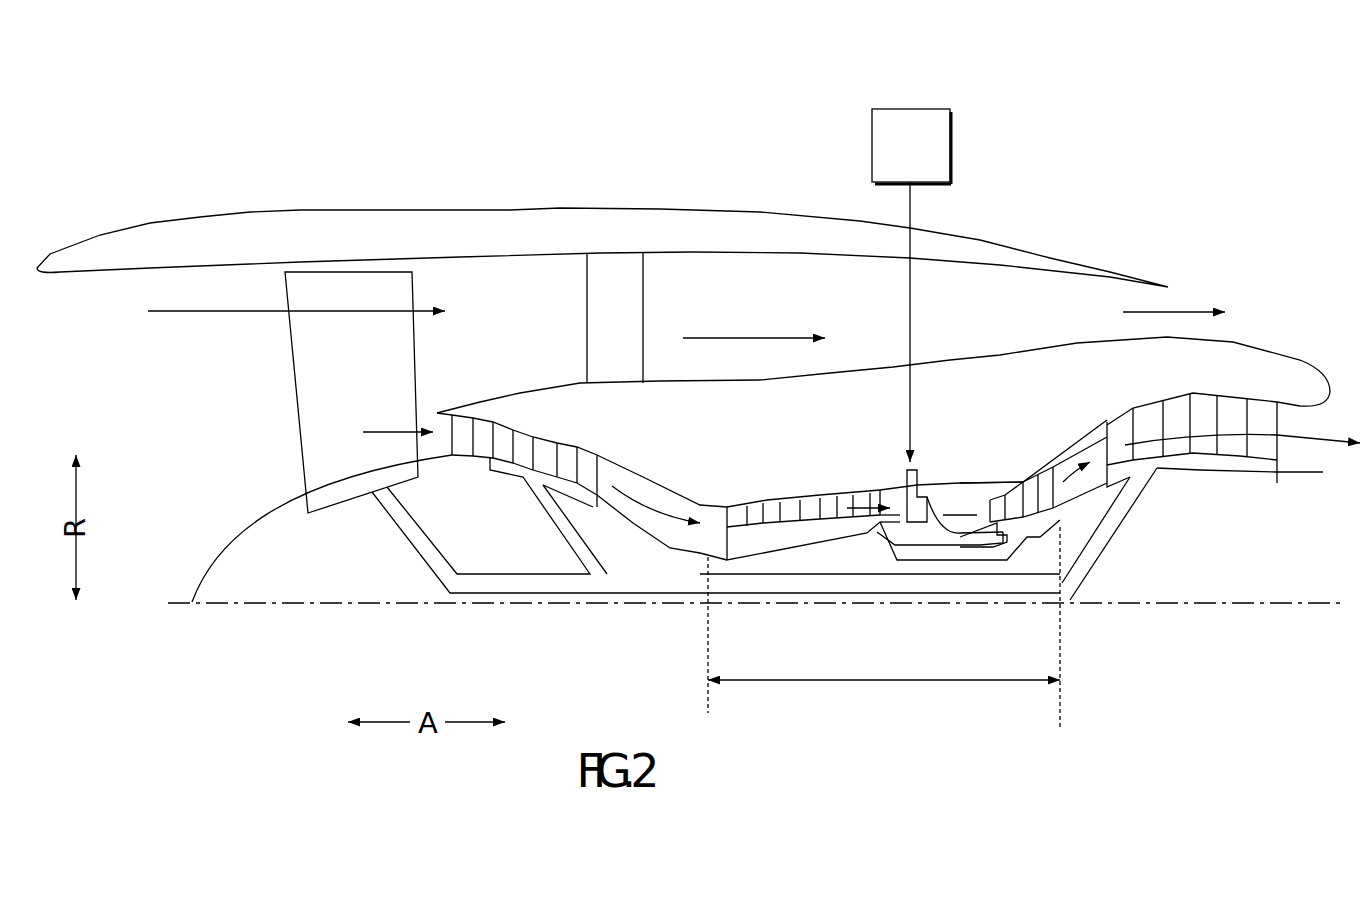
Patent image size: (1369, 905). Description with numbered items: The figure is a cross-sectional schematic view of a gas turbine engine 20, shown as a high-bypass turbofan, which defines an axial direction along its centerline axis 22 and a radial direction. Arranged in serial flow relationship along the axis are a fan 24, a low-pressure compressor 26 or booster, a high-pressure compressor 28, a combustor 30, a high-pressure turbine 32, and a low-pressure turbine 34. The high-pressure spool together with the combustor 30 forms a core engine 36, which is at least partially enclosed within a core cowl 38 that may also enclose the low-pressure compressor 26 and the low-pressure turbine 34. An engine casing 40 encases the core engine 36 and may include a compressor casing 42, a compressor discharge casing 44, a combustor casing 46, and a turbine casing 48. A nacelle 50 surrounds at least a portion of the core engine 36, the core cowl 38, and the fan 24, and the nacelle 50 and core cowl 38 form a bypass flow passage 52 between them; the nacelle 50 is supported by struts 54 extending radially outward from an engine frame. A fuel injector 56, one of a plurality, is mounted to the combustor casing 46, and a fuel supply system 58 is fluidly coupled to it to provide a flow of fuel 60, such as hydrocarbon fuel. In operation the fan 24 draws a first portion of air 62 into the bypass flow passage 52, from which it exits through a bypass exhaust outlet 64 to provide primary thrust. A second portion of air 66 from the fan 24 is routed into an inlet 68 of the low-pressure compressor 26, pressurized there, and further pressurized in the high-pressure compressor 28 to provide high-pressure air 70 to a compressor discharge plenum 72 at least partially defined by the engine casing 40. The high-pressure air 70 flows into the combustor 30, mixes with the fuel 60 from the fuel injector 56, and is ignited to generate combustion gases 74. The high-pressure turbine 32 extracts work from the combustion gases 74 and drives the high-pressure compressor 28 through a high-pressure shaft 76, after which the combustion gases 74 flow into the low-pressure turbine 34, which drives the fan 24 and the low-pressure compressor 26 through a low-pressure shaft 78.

The gas turbine engine 20 is at (602, 210).
The centerline axis 22 is at (362, 606).
The fan 24 is at (252, 392).
The low-pressure compressor 26 is at (530, 405).
The high-pressure compressor 28 is at (812, 560).
The combustor 30 is at (981, 543).
The high-pressure turbine 32 is at (1056, 544).
The low-pressure turbine 34 is at (1234, 362).
The core engine 36 is at (815, 681).
The core cowl 38 is at (1077, 343).
The engine casing 40 is at (1012, 450).
The compressor casing 42 is at (657, 483).
The compressor discharge casing 44 is at (822, 494).
The combustor casing 46 is at (957, 483).
The turbine casing 48 is at (1133, 408).
The nacelle 50 is at (460, 222).
The bypass flow passage 52 is at (768, 287).
The struts 54 is at (615, 318).
The fuel injectors 56 is at (918, 478).
The fuel supply system 58 is at (911, 146).
The fuel 60 is at (912, 328).
The first portion of air 62 is at (178, 313).
The bypass exhaust outlet 64 is at (1173, 292).
The second portion of air 66 is at (432, 430).
The inlet 68 is at (435, 408).
The high-pressure air 70 is at (863, 507).
The compressor discharge plenum 72 is at (850, 500).
The combustion gases 74 is at (1345, 440).
The high-pressure shaft 76 is at (932, 556).
The low-pressure shaft 78 is at (668, 596).